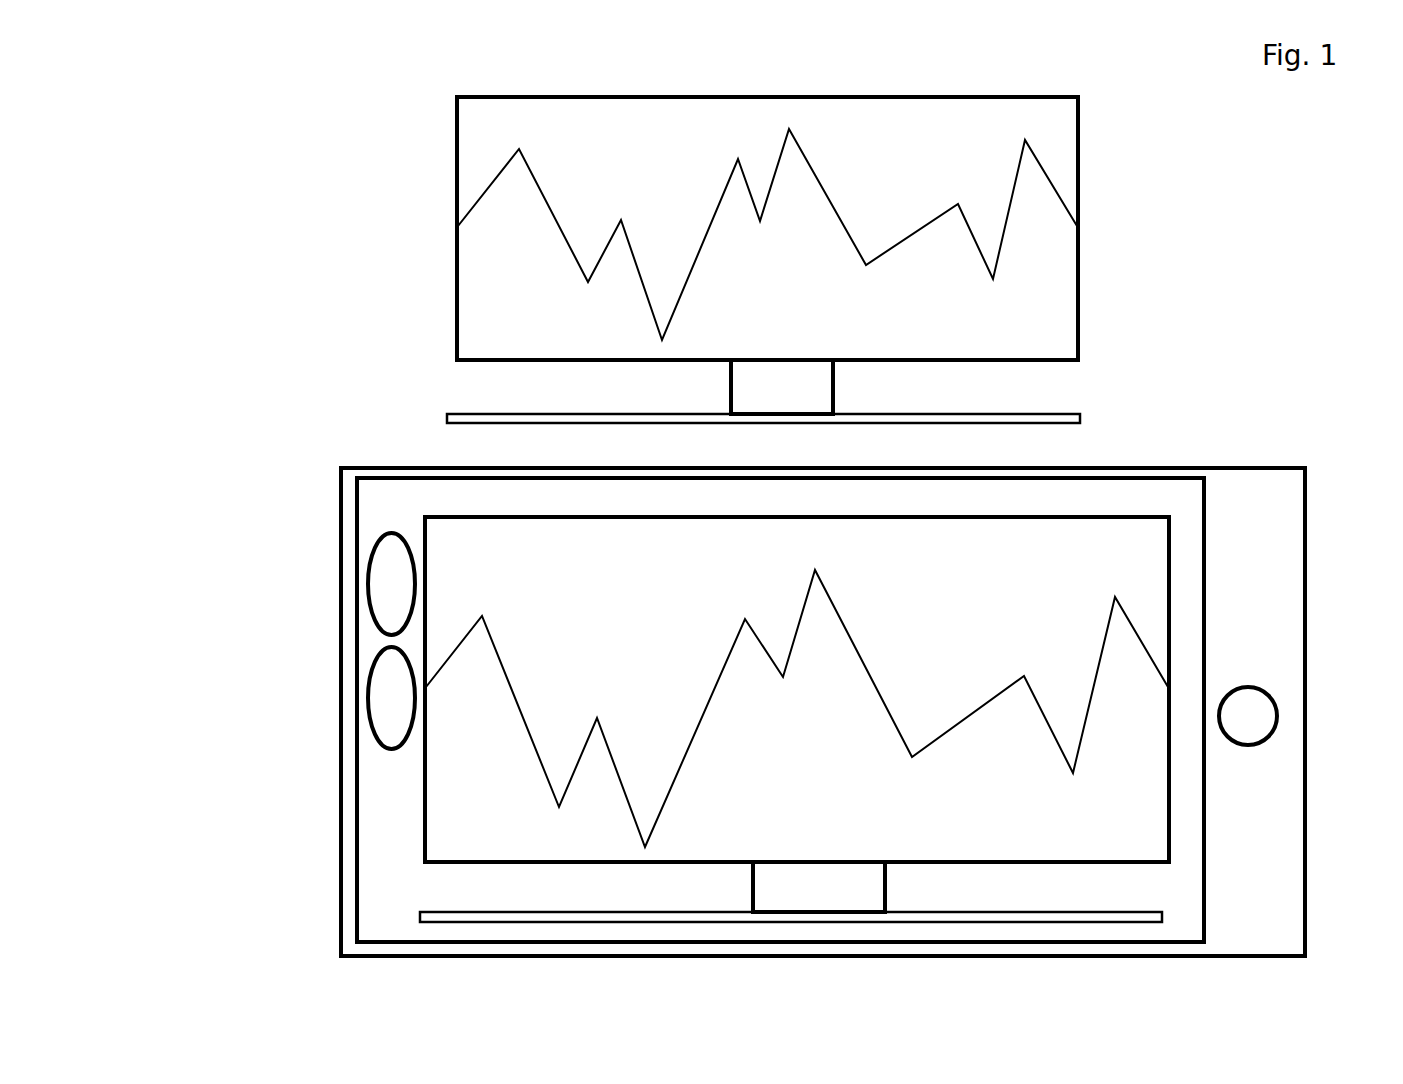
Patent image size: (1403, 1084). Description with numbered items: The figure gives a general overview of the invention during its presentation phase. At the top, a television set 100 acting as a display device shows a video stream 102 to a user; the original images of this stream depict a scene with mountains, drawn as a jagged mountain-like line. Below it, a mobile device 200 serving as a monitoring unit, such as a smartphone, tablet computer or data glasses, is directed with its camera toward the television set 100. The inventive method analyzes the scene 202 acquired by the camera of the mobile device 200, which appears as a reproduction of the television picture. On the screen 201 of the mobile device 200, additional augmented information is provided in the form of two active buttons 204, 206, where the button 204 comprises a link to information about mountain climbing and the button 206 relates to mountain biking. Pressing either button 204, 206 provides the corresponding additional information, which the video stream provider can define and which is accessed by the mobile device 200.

The television set 100 is at (409, 88).
The video stream 102 is at (482, 175).
The mobile device 200 is at (348, 433).
The screen 201 is at (1189, 522).
The scene 202 is at (1126, 535).
The active button 204 is at (373, 582).
The active button 206 is at (373, 705).